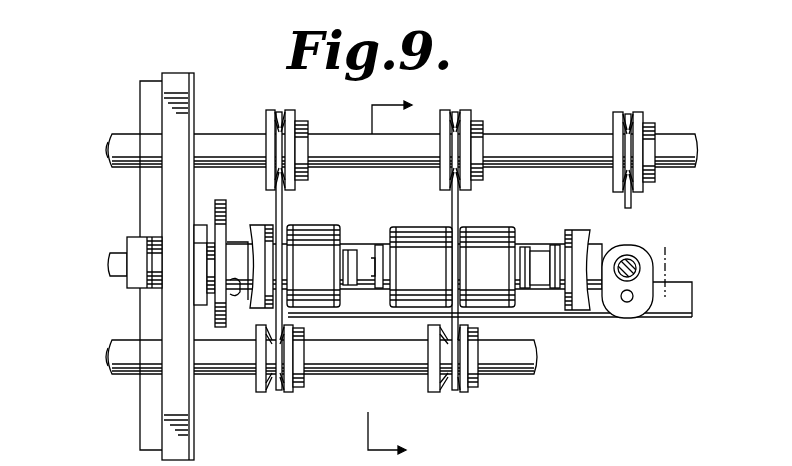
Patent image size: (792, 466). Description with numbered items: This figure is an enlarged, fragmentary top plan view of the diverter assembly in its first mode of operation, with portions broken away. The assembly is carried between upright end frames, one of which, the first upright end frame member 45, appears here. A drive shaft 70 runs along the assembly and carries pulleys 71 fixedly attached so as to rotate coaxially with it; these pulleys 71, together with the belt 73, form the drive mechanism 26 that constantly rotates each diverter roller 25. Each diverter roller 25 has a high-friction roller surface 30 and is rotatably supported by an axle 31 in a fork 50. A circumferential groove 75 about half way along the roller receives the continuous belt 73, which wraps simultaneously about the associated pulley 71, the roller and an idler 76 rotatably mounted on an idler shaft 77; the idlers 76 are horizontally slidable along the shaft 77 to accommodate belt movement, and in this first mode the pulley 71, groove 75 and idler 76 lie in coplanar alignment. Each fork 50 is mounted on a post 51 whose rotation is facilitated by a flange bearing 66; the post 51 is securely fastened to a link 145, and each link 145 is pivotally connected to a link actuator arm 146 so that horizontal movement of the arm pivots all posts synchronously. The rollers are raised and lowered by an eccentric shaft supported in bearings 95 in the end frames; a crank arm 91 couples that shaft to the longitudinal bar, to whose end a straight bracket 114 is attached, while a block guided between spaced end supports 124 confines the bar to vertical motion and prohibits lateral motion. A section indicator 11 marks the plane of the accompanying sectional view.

The section line 11- 11 is at (373, 281).
The diverter roller 25 is at (515, 232).
The drive mechanism 26 is at (452, 392).
The roller surface 30 is at (417, 227).
The axle 31 is at (361, 258).
The first upright end frame member 45 is at (198, 452).
The fork 50 is at (369, 288).
The post 51 is at (637, 257).
The flange bearing 66 is at (623, 256).
The drive shaft 70 is at (222, 134).
The pulley 71 is at (296, 120).
The belt 73 is at (276, 207).
The circumferential groove 75 is at (283, 226).
The idler 76 is at (300, 392).
The idler shaft 77 is at (368, 374).
The crank arm 91 is at (224, 200).
The bearing 95 is at (128, 240).
The straight bracket 114 is at (240, 292).
The end support 124 is at (198, 297).
The link 145 is at (633, 312).
The link actuator arm 146 is at (694, 310).